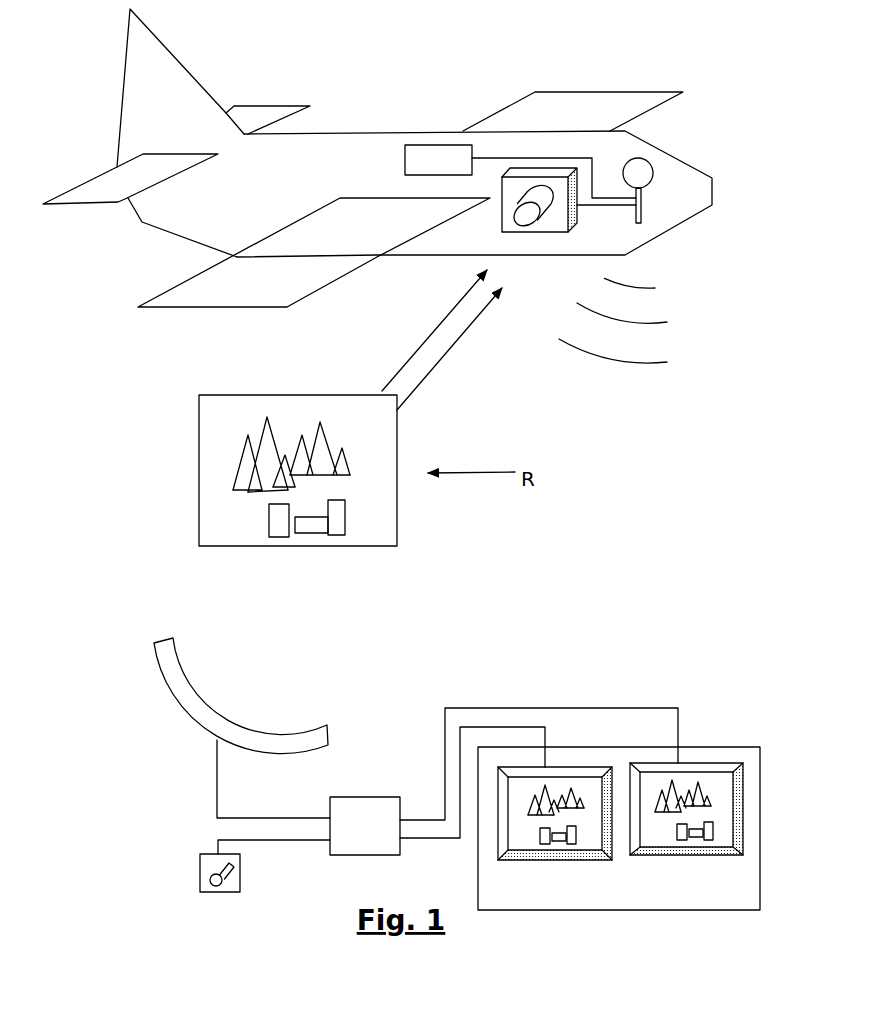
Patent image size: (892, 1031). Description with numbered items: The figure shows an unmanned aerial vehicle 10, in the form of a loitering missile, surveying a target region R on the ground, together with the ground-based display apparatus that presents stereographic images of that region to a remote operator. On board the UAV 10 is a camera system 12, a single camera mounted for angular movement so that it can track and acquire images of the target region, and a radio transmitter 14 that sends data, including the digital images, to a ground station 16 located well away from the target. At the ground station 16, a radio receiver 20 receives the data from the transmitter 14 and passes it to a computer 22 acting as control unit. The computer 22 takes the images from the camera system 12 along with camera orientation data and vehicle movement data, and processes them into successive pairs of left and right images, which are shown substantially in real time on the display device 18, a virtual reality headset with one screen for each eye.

The UAV 10 is at (683, 173).
The camera system 12 is at (512, 222).
The radio transmitter 14 is at (640, 168).
The ground station 16 is at (180, 766).
The display device 18 is at (752, 808).
The radio receiver 20 is at (183, 695).
The computer 22 is at (504, 781).